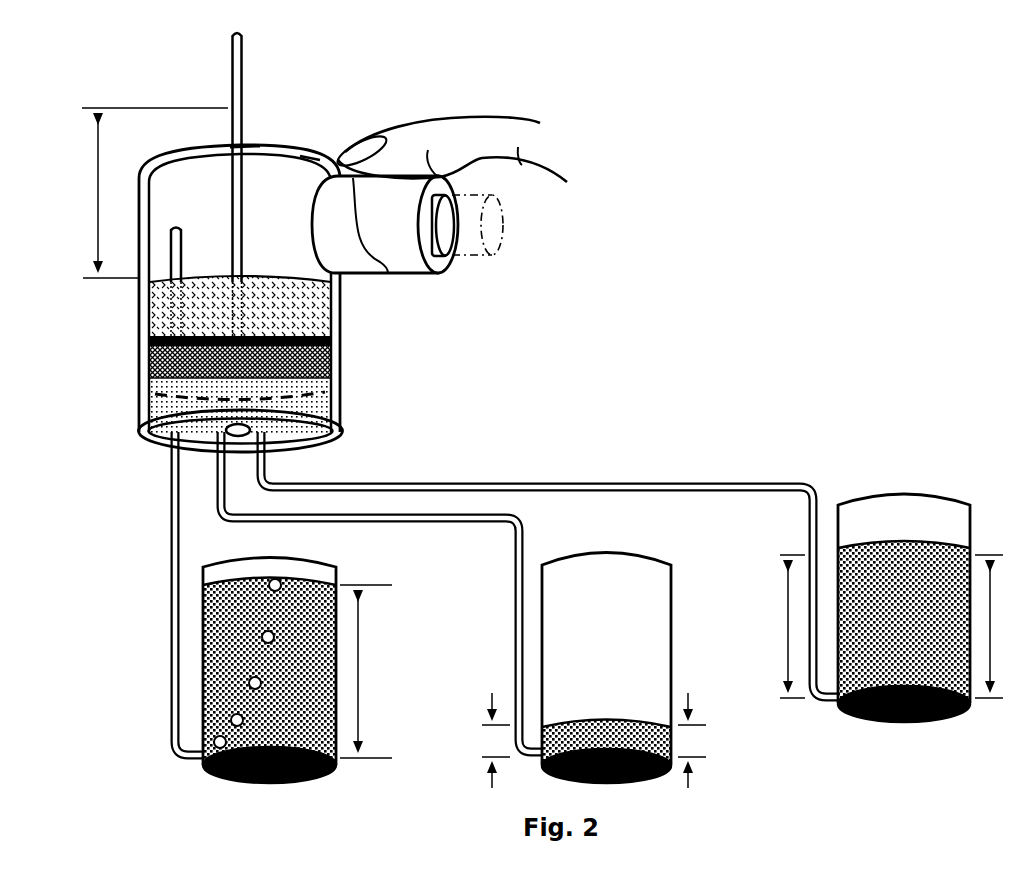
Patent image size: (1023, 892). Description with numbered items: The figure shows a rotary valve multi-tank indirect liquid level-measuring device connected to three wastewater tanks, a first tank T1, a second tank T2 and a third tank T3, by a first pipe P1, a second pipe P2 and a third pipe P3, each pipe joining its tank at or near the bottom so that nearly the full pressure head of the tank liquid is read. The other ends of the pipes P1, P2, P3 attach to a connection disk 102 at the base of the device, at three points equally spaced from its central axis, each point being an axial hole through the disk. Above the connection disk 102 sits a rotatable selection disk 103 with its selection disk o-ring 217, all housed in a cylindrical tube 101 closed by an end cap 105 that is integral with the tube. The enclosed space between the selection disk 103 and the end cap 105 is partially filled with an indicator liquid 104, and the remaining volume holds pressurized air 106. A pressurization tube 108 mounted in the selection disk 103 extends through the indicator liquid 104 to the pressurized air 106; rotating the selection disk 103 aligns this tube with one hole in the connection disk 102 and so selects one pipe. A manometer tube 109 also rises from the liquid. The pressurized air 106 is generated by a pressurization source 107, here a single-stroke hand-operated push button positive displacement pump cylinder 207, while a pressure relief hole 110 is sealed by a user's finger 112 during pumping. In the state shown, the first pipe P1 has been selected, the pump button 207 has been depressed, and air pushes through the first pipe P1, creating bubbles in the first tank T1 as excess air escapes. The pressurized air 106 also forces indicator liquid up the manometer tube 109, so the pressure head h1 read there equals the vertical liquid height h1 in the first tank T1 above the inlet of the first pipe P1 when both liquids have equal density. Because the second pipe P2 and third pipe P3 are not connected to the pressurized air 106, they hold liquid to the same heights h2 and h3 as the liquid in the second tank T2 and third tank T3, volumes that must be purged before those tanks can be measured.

The cylindrical tube 101 is at (344, 410).
The connection disk 102 is at (160, 440).
The selection disk 103 is at (150, 368).
The indicator liquid 104 is at (148, 299).
The end cap 105 is at (274, 145).
The pressurized air 106 is at (300, 180).
The pressurization source 107 is at (417, 273).
The pressurization tube 108 is at (176, 228).
The manometer tube 109 is at (232, 50).
The pressure relief hole 110 is at (388, 273).
The user's finger 112 is at (492, 85).
The push button positive displacement pump cylinder 207 is at (505, 230).
The selection disk o-ring 217 is at (150, 343).
The first pipe P1 is at (171, 638).
The second pipe P2 is at (426, 523).
The third pipe P3 is at (427, 483).
The first tank T1 is at (336, 567).
The second tank T2 is at (672, 596).
The third tank T3 is at (930, 490).
The pressure head h1 is at (155, 193).
The liquid height in second pipe h2 is at (594, 740).
The liquid height in third pipe h3 is at (891, 626).